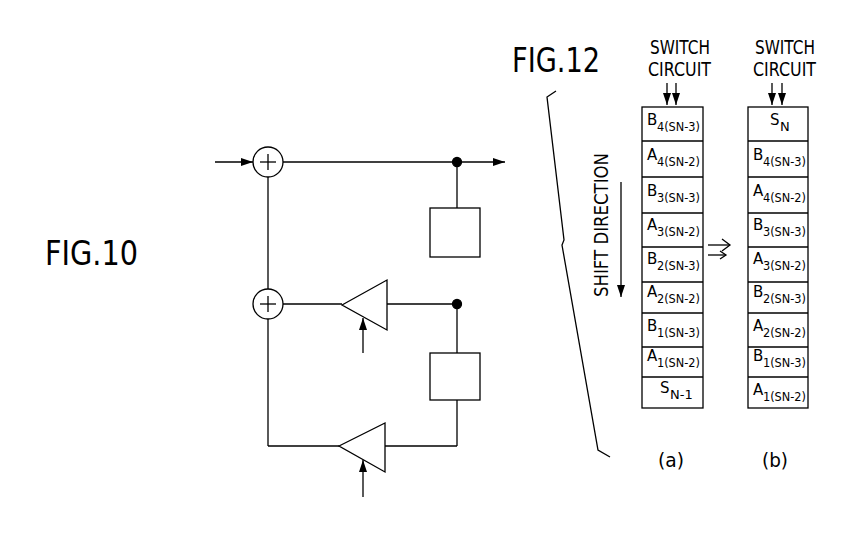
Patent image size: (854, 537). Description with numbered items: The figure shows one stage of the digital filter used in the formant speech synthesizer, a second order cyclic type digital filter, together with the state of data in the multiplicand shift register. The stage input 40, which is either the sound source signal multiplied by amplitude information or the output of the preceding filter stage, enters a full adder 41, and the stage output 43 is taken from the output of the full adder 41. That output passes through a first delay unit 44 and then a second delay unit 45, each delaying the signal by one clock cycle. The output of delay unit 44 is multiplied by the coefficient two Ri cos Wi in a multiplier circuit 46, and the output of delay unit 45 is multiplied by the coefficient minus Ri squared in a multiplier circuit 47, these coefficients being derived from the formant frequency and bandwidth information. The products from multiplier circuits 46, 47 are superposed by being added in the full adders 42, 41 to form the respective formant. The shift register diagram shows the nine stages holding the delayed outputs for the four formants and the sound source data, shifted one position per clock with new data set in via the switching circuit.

The input signal 40 is at (215, 160).
The full adder 41 is at (270, 147).
The full adder 42 is at (279, 293).
The output signal 43 is at (475, 160).
The delay unit 44 is at (481, 228).
The delay unit 45 is at (481, 381).
The multiplier circuit 46 is at (387, 294).
The multiplier circuit 47 is at (387, 440).